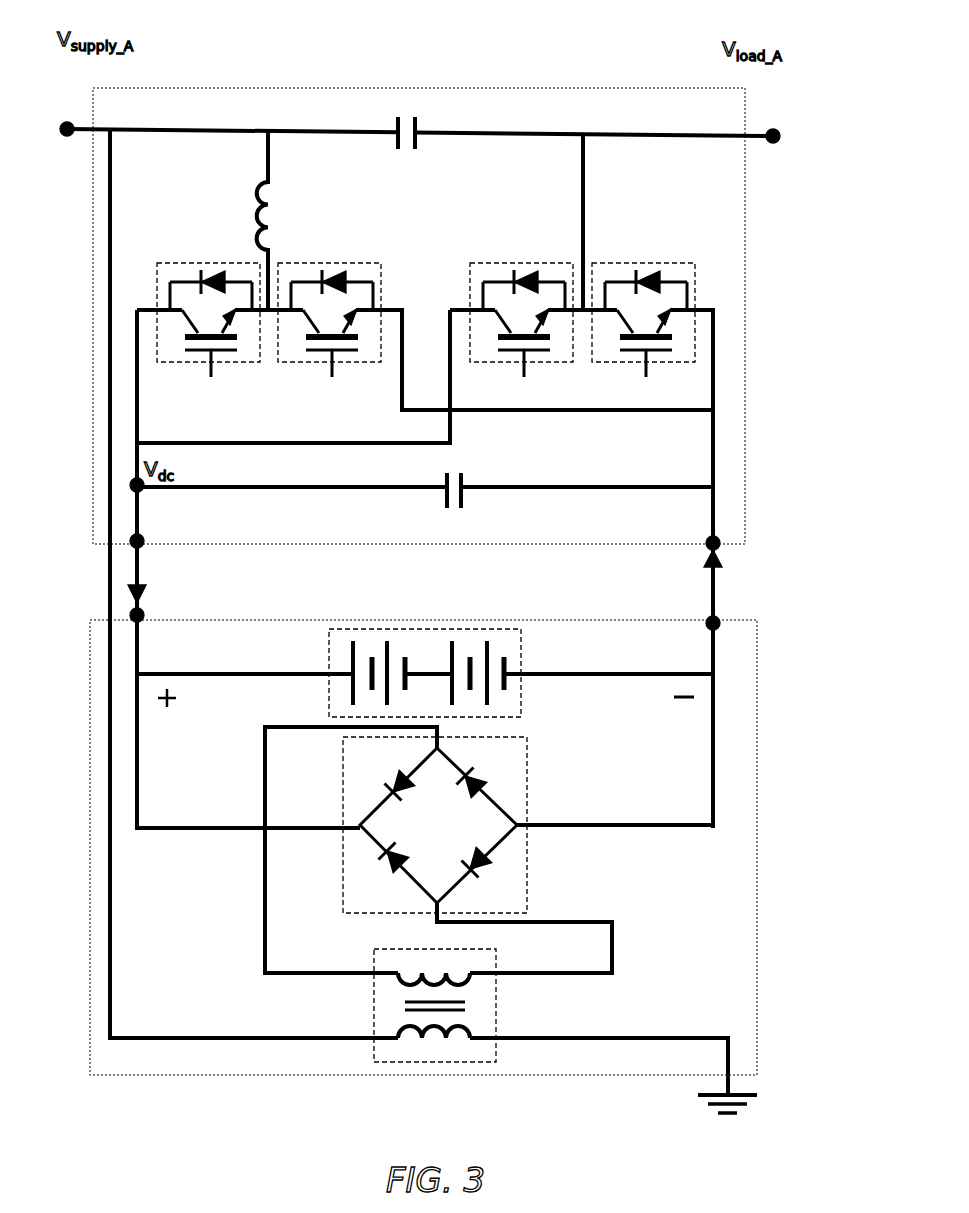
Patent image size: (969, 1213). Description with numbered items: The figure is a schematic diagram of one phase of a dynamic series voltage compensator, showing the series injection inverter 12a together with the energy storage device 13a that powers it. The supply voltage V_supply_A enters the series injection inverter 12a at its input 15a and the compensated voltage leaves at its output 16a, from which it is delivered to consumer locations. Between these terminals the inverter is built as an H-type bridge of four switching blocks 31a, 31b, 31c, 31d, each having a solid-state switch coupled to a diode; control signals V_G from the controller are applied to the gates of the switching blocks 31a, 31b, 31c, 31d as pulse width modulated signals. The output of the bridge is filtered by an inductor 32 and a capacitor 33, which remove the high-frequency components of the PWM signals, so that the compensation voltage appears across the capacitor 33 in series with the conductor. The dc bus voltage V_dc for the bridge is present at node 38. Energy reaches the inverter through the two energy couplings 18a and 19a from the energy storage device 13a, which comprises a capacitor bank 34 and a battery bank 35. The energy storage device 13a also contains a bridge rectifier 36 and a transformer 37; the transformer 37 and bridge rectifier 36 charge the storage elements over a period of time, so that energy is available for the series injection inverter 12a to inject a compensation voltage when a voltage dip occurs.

The series injection inverter 12a is at (419, 284).
The energy storage device 13a is at (423, 884).
The input 15a is at (169, 79).
The output 16a is at (697, 85).
The energy coupling 18a is at (185, 578).
The energy coupling 19a is at (754, 583).
The switching block 31a is at (201, 298).
The switching block 31b is at (350, 303).
The switching block 31c is at (521, 297).
The switching block 31d is at (667, 302).
The inductor 32 is at (216, 220).
The capacitor 33 is at (437, 164).
The capacitor bank 34 is at (400, 531).
The battery bank 35 is at (452, 649).
The bridge rectifier 36 is at (483, 825).
The transformer 37 is at (474, 1032).
The node 38 is at (175, 512).